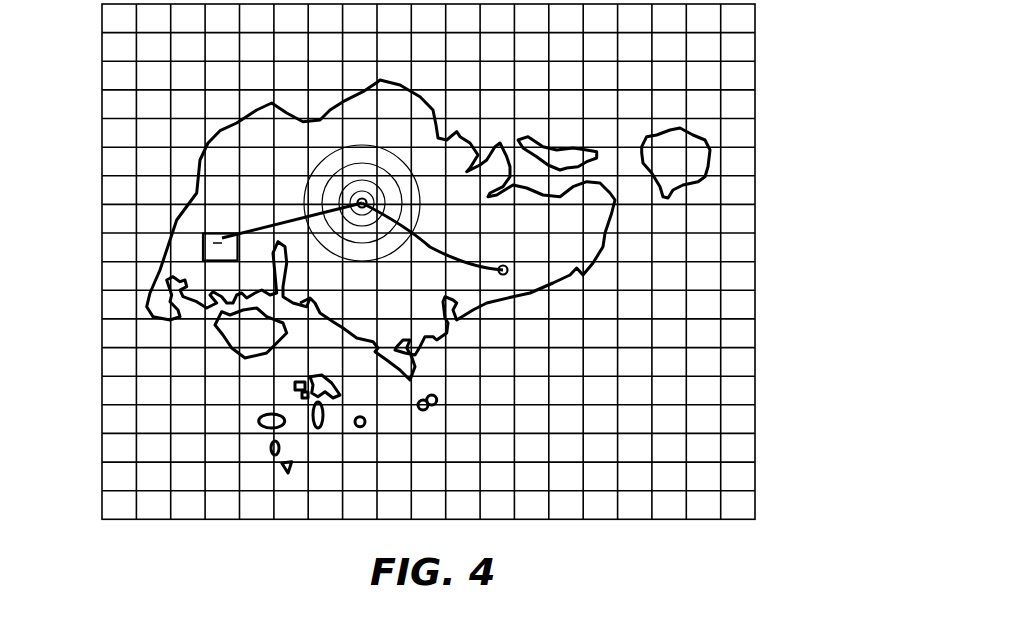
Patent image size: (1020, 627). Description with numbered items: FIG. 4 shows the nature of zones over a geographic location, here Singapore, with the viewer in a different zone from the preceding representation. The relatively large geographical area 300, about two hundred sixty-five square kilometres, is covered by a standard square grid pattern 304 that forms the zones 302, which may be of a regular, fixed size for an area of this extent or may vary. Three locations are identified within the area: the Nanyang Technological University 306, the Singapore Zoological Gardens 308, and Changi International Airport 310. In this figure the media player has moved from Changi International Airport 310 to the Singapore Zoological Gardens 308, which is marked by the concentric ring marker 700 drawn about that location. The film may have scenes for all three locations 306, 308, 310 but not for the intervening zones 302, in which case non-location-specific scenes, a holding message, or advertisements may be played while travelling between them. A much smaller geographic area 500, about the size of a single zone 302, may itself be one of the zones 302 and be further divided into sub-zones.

The geographical area 300 is at (487, 108).
The zones 302 is at (705, 218).
The square grid pattern 304 is at (698, 262).
The location of Nanyang Technological University 306 is at (200, 252).
The location of Singapore Zoological Gardens 308 is at (352, 200).
The location of Changi International Airport 310 is at (503, 274).
The geographic area 500 is at (452, 306).
The coverage rings 700 is at (403, 207).